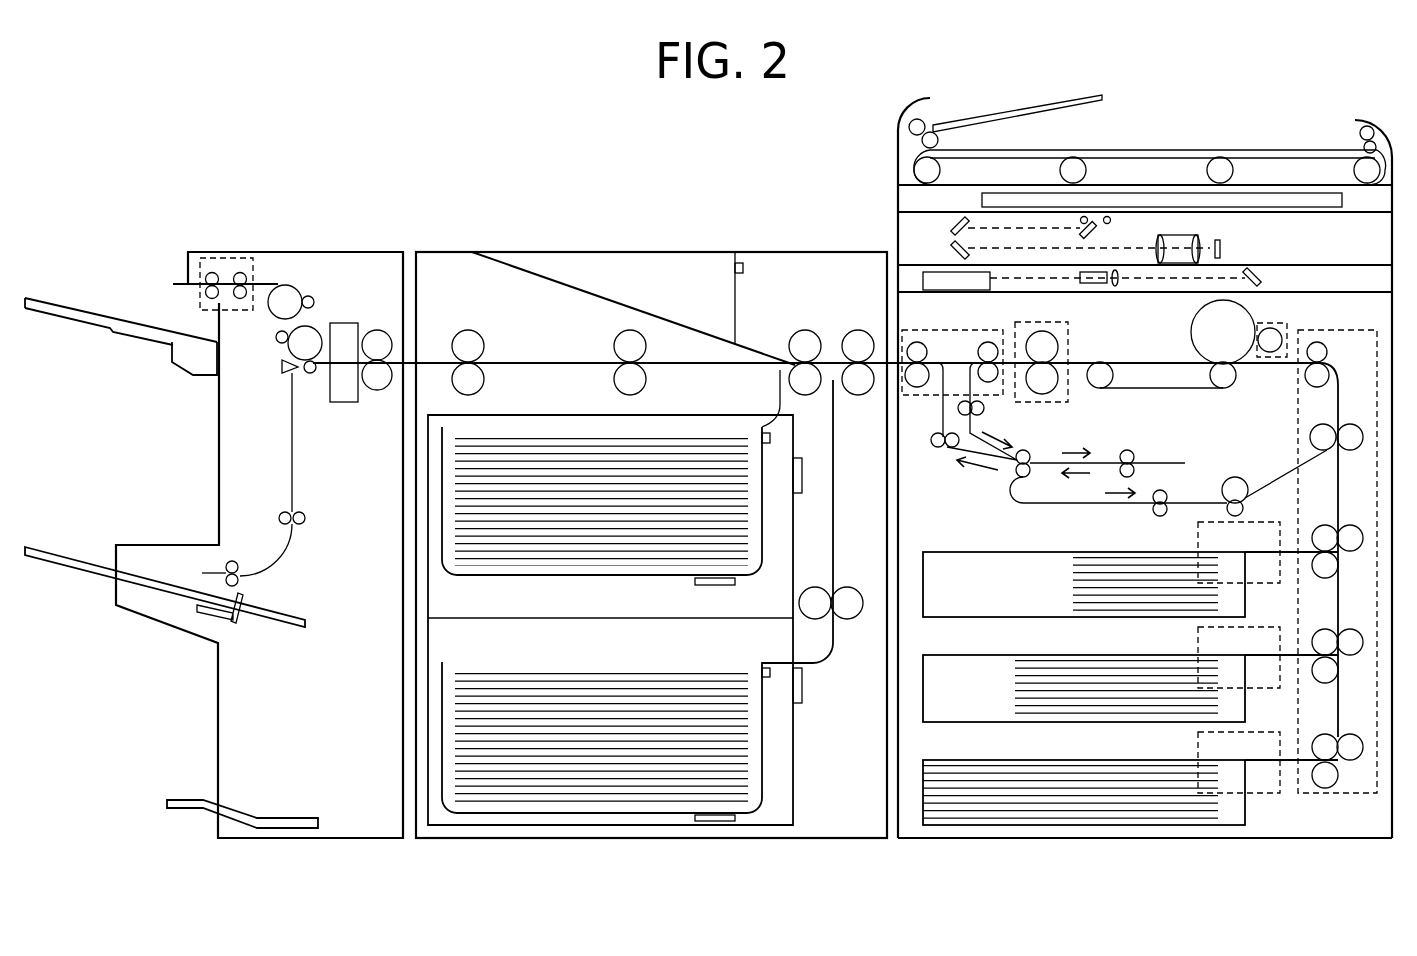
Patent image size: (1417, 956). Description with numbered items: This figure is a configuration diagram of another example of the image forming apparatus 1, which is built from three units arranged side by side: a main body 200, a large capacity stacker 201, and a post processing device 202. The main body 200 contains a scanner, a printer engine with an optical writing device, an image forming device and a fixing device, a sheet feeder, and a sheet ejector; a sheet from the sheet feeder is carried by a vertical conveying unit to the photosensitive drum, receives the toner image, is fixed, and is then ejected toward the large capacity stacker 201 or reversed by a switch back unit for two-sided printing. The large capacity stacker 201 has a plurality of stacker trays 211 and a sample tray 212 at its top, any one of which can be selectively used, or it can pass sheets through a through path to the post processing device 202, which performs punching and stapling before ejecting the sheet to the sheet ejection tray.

The image forming apparatus 1 is at (608, 113).
The main body 200 is at (1142, 842).
The large capacity stacker 201 is at (808, 250).
The post processing device 202 is at (219, 738).
The stacker tray 211 is at (559, 432).
The sample tray 212 is at (652, 265).